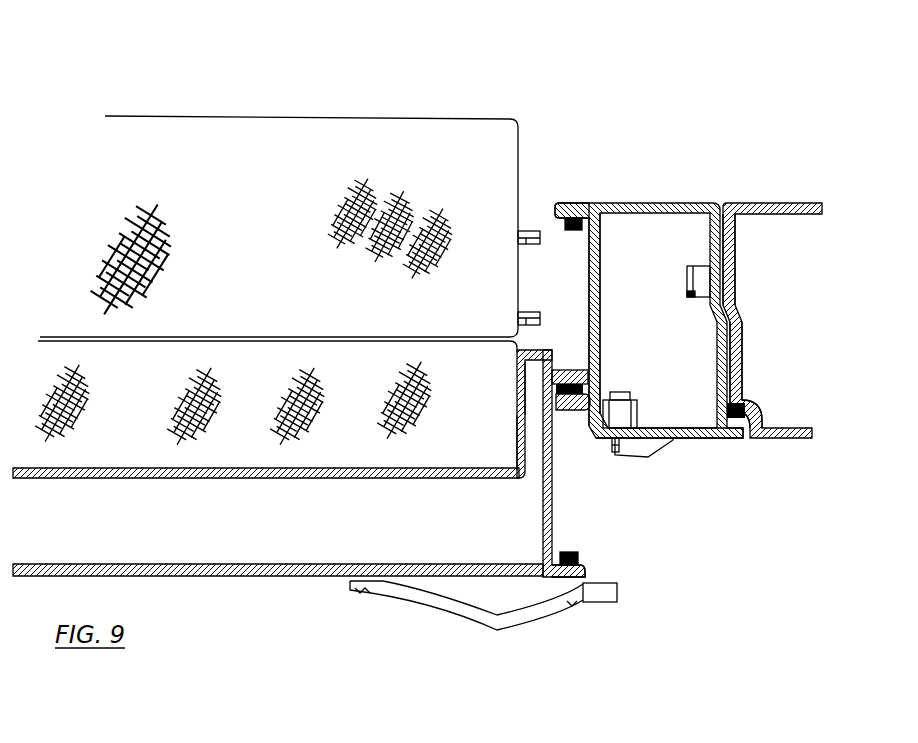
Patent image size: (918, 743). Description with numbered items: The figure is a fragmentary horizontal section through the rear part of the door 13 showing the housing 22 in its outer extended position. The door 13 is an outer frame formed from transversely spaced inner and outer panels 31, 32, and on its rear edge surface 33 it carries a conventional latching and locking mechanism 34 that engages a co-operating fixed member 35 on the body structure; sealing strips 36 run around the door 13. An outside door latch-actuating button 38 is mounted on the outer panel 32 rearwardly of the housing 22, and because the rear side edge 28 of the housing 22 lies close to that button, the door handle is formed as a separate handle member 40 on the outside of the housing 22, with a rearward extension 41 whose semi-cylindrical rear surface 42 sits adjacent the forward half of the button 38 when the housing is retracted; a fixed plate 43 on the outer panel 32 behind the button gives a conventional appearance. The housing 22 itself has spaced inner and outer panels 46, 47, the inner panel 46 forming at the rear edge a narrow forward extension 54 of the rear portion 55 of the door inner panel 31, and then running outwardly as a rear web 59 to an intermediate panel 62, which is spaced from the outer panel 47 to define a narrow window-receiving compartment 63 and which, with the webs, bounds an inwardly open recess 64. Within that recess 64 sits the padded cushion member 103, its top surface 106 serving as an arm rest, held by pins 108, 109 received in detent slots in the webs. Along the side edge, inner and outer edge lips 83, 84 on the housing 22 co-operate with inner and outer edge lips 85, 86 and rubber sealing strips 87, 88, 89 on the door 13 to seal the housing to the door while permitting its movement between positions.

The door 13 is at (643, 325).
The housing 22 is at (278, 614).
The rear side edge 28 is at (595, 463).
The inner panel 31 is at (759, 269).
The outer panel 32 is at (720, 440).
The rear edge surface 33 is at (733, 360).
The latching and locking mechanism 34 is at (697, 267).
The fixed member 35 is at (724, 277).
The sealing strips 36 is at (747, 408).
The outside door latch-actuating button 38 is at (614, 450).
The handle member 40 is at (516, 624).
The rearward extension 41 is at (597, 595).
The semi-cylindrical rear surface 42 is at (618, 592).
The fixed plate 43 is at (638, 447).
The inner panel 46 is at (525, 383).
The outer panel 47 is at (256, 580).
The narrow forward extension 54 is at (518, 380).
The rear portion 55 is at (618, 307).
The rear web 59 is at (517, 440).
The intermediate panel 62 is at (280, 468).
The window-receiving compartment 63 is at (168, 528).
The inwardly open recess 64 is at (271, 397).
The inner edge lip 83 is at (572, 370).
The outer edge lip 84 is at (586, 572).
The inner edge lip 85 is at (586, 202).
The outer edge lip 86 is at (578, 412).
The rubber sealing strip 87 is at (578, 556).
The rubber sealing strip 88 is at (598, 378).
The rubber sealing strip 89 is at (566, 222).
The cushion member 103 is at (290, 187).
The top surface 106 is at (270, 250).
The pin 108 is at (530, 312).
The pin 109 is at (522, 246).